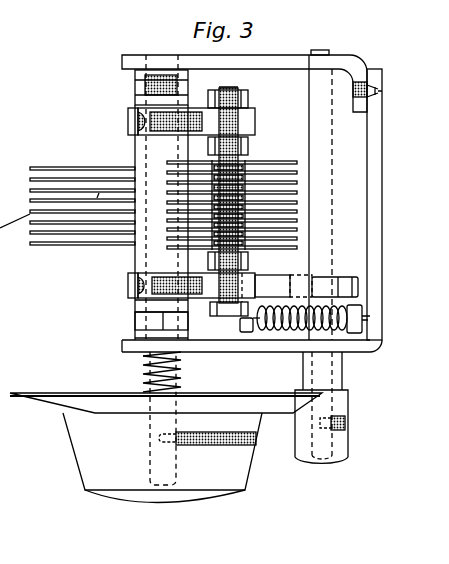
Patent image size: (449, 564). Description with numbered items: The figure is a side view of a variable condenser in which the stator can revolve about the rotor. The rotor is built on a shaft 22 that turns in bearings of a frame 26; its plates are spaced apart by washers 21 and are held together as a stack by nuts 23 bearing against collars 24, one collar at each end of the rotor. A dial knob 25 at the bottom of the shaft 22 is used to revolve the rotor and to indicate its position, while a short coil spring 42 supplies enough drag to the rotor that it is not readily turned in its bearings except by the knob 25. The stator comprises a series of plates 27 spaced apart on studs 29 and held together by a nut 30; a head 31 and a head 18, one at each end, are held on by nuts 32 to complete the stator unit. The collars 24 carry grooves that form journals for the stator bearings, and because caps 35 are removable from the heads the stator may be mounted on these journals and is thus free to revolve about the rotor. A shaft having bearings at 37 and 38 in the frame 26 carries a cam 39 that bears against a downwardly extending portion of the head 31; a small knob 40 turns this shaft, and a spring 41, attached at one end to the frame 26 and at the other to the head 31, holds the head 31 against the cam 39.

The head 18 is at (256, 121).
The washers 21 is at (138, 182).
The shaft 22 is at (153, 252).
The nuts 23 is at (135, 83).
The collars 24 is at (135, 145).
The dial knob 25 is at (252, 472).
The frame 26 is at (357, 56).
The plates 27 is at (276, 177).
The studs 29 is at (228, 92).
The nut 30 is at (251, 143).
The head 31 is at (285, 281).
The nuts 32 is at (225, 321).
The caps 35 is at (128, 112).
The bearing 37 is at (317, 340).
The bearing 38 is at (312, 60).
The cam 39 is at (357, 284).
The small knob 40 is at (348, 438).
The spring 41 is at (266, 325).
The short coil spring 42 is at (145, 380).